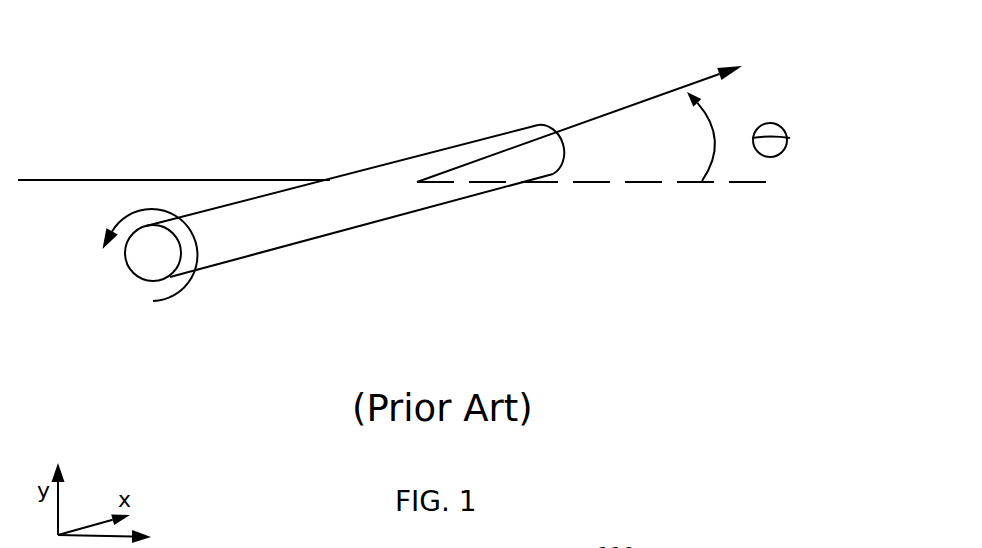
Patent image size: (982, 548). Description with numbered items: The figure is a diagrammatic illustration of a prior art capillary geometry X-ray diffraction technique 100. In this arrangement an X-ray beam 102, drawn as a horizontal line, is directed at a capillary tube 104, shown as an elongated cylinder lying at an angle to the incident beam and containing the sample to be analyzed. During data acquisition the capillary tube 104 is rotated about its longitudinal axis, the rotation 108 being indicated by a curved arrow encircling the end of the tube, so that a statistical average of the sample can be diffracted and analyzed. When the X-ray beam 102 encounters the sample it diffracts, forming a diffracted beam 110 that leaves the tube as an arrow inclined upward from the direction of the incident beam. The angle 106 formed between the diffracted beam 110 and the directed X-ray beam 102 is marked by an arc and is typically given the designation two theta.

The capillary geometry X-ray diffraction technique 100 is at (211, 60).
The X-ray beam 102 is at (110, 178).
The capillary tube 104 is at (315, 222).
The angle 106 is at (792, 106).
The rotation 108 is at (190, 288).
The diffracted beam 110 is at (620, 110).